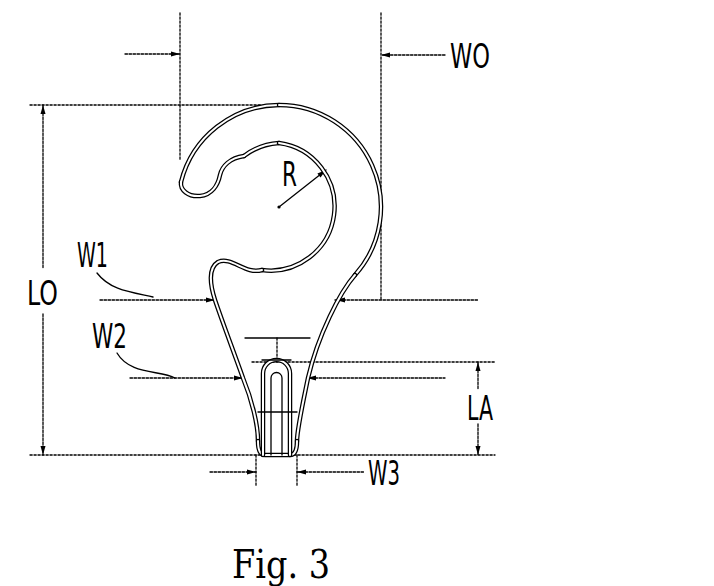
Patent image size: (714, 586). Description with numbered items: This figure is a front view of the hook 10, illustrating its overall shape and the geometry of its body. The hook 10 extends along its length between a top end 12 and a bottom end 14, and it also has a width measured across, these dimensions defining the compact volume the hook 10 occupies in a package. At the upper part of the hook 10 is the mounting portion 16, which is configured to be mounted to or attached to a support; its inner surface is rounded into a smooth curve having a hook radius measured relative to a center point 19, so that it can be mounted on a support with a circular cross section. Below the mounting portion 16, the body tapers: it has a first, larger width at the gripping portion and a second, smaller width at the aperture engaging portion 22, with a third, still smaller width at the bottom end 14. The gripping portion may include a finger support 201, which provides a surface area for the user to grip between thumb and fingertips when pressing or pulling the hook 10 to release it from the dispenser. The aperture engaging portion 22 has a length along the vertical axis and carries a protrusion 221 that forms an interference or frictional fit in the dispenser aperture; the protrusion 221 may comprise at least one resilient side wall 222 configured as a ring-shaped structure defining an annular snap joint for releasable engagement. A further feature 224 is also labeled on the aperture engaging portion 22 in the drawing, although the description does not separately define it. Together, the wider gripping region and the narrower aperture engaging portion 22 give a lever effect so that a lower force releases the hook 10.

The hook 10 is at (352, 269).
The top end 12 is at (280, 104).
The bottom end 14 is at (275, 457).
The mounting portion 16 is at (365, 205).
The center point 19 is at (279, 207).
The finger support 201 is at (363, 273).
The aperture engaging portion 22 is at (295, 388).
The protrusion 221 is at (291, 360).
The resilient side wall 222 is at (292, 385).
The slot outer wall 224 is at (260, 393).